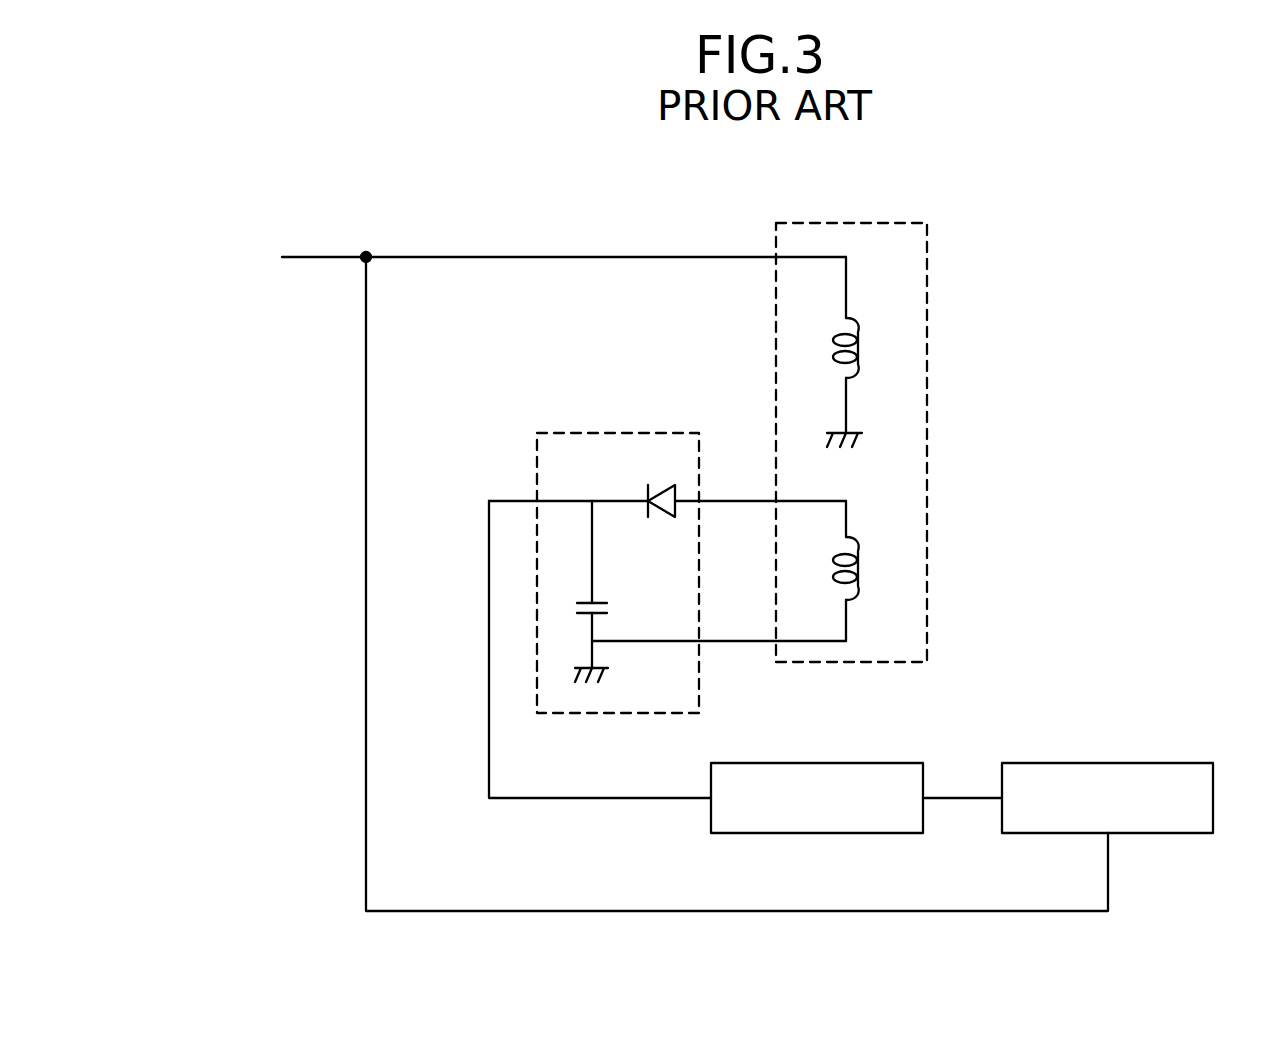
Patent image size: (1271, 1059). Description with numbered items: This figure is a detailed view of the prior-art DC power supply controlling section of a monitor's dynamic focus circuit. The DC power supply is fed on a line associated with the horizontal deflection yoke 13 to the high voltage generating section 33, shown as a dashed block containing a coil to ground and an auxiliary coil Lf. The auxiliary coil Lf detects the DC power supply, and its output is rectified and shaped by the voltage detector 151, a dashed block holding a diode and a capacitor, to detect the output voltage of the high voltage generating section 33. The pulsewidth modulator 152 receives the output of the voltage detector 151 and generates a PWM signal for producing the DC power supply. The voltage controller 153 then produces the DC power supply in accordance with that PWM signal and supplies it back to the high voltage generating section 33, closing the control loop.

The horizontal deflection yoke 13 is at (671, 561).
The high voltage generating section 33 is at (927, 363).
The voltage detector 151 is at (608, 433).
The pulsewidth modulator (PWM) 152 is at (812, 763).
The voltage controller 153 is at (1105, 763).